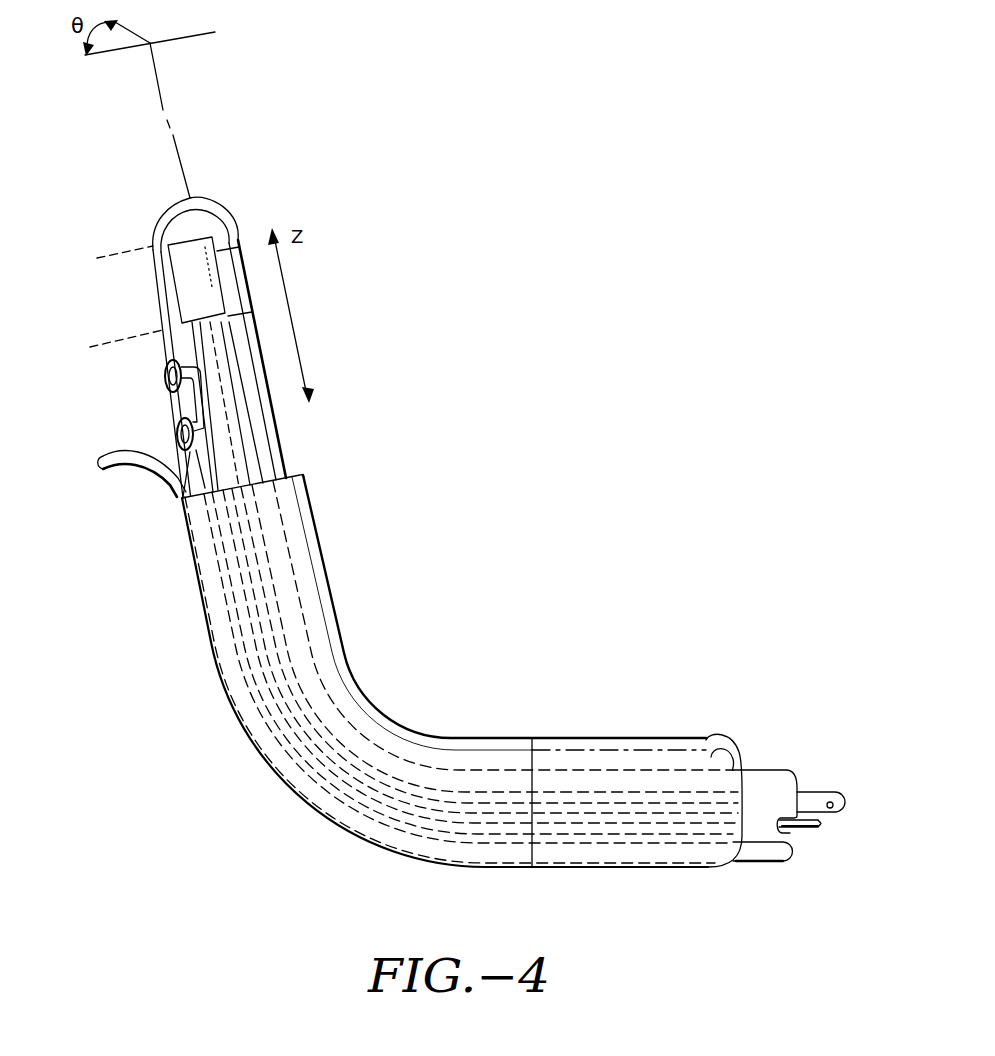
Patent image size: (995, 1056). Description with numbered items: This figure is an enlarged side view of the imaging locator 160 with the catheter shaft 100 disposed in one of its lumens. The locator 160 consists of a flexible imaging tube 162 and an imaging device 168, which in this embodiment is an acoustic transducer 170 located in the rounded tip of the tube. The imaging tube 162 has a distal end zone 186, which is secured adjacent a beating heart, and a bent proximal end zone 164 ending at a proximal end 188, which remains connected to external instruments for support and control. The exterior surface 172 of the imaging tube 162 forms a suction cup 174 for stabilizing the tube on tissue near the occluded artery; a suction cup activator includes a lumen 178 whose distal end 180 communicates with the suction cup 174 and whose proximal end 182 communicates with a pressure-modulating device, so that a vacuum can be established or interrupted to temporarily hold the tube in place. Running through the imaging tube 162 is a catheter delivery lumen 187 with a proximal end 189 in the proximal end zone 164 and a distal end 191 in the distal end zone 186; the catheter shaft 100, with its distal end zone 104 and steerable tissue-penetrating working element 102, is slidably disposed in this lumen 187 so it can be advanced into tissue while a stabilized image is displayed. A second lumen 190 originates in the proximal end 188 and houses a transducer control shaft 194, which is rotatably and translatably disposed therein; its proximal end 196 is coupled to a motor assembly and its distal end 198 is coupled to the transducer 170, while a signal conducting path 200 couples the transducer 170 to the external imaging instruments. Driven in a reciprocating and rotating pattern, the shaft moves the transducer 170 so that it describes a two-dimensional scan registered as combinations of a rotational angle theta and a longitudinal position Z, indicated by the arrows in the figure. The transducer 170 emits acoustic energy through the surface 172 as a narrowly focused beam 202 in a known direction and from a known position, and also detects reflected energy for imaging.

The catheter shaft 100 is at (182, 495).
The steerable tissue-penetrating working element 102 is at (100, 463).
The distal end zone 104 is at (137, 477).
The imaging locator 160 is at (270, 770).
The imaging tube 162 is at (223, 207).
The proximal end zone 164 is at (682, 868).
The imaging device 168 is at (230, 310).
The acoustic transducer 170 is at (238, 245).
The exterior surface 172 is at (242, 270).
The suction cup 174 is at (167, 368).
The lumen 178 is at (200, 402).
The distal end 180 is at (165, 380).
The proximal end 182 is at (817, 829).
The distal end zone 186 is at (203, 603).
The catheter delivery lumen 187 is at (200, 572).
The proximal end 188 is at (738, 752).
The proximal end 189 is at (732, 850).
The lumen 190 is at (238, 358).
The distal end 191 is at (200, 197).
The transducer control shaft 194 is at (247, 447).
The proximal end 196 is at (833, 792).
The distal end 198 is at (250, 333).
The signal conducting path 200 is at (228, 406).
The narrowly focused beam 202 is at (97, 258).